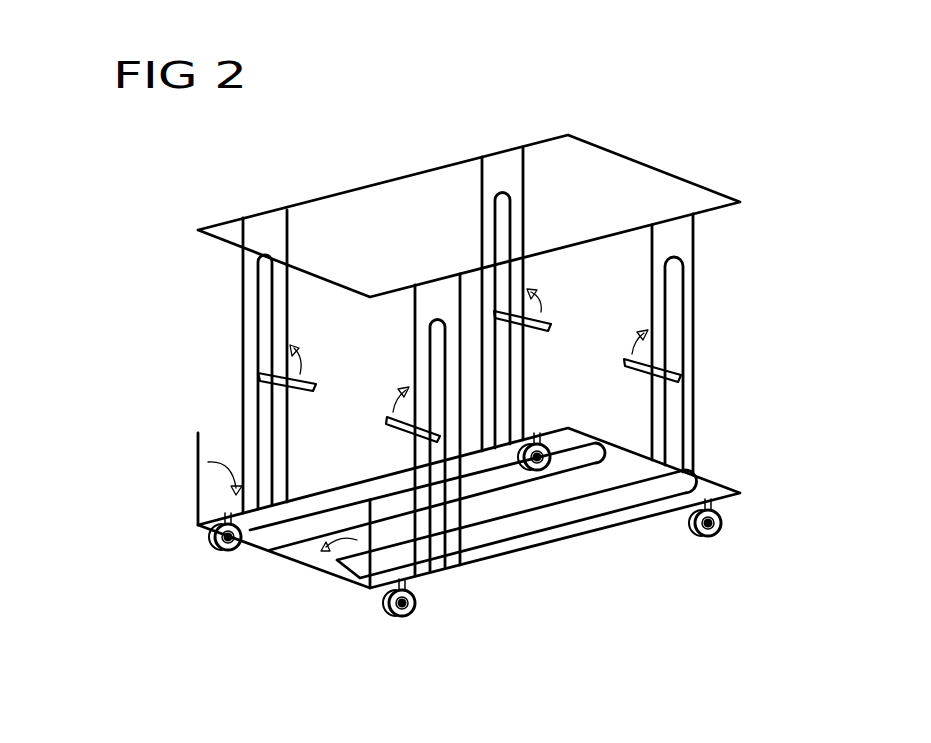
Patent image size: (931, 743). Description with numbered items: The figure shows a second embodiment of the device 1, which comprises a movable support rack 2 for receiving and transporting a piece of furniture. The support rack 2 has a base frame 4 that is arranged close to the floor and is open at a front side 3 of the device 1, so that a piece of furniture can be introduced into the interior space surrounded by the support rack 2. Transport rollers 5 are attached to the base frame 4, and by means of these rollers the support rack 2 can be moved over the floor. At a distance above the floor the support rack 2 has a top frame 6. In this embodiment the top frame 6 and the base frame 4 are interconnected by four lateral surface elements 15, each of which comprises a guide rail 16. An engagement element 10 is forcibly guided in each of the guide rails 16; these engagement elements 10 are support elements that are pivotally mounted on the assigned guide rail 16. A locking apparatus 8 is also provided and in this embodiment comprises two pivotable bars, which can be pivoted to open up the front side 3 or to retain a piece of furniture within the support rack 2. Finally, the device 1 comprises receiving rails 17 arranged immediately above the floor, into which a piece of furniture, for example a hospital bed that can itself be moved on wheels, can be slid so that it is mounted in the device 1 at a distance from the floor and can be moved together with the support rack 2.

The device 1 is at (196, 194).
The support rack 2 is at (654, 135).
The front side 3 is at (178, 374).
The base frame 4 is at (722, 500).
The transport rollers 5 is at (215, 540).
The top frame 6 is at (712, 182).
The locking apparatus 8 is at (312, 566).
The engagement element 10 is at (390, 419).
The lateral surface elements 15 is at (268, 228).
The guide rail 16 is at (497, 190).
The receiving rails 17 is at (278, 527).